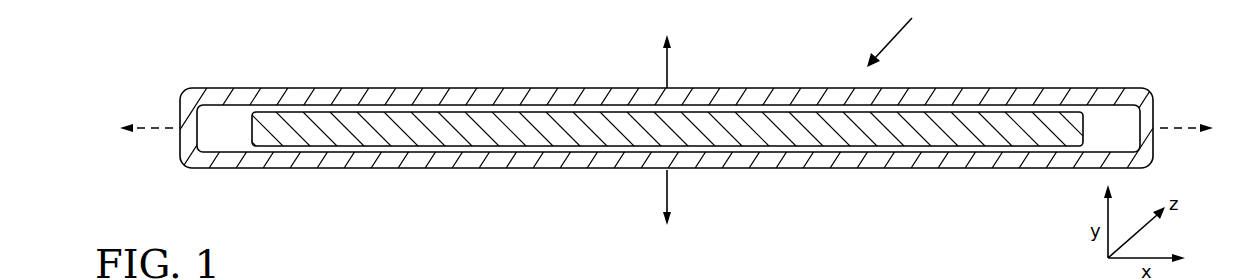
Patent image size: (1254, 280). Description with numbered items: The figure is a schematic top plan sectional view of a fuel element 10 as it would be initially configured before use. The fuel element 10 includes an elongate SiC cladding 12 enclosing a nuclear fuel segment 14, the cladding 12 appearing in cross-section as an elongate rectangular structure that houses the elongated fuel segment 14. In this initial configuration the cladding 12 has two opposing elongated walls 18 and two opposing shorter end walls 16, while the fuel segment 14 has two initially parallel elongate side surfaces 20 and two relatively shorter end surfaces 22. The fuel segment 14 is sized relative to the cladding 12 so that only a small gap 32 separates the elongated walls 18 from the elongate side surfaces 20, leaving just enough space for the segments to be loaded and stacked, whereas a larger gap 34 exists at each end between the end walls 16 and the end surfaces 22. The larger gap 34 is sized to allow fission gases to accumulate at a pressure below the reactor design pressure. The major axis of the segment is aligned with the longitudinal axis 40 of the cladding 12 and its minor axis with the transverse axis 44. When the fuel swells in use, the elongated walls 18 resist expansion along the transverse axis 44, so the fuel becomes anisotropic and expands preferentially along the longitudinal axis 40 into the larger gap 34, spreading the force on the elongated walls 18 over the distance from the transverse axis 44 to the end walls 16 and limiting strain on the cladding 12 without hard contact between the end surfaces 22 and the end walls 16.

The fuel element 10 is at (901, 38).
The SiC cladding 12 is at (992, 89).
The nuclear fuel segment 14 is at (753, 135).
The end walls 16 is at (196, 121).
The elongated walls 18 is at (505, 115).
The elongate side surfaces 20 is at (293, 105).
The end surfaces 22 is at (251, 132).
The small gap 32 is at (587, 108).
The larger gap 34 is at (213, 135).
The longitudinal axis 40 is at (1202, 127).
The transverse axis 44 is at (668, 119).